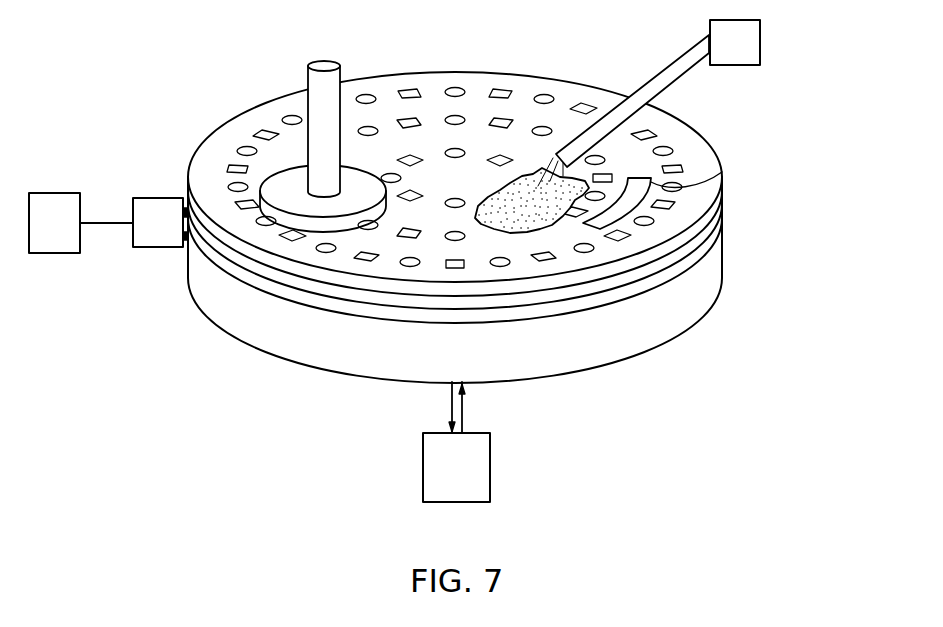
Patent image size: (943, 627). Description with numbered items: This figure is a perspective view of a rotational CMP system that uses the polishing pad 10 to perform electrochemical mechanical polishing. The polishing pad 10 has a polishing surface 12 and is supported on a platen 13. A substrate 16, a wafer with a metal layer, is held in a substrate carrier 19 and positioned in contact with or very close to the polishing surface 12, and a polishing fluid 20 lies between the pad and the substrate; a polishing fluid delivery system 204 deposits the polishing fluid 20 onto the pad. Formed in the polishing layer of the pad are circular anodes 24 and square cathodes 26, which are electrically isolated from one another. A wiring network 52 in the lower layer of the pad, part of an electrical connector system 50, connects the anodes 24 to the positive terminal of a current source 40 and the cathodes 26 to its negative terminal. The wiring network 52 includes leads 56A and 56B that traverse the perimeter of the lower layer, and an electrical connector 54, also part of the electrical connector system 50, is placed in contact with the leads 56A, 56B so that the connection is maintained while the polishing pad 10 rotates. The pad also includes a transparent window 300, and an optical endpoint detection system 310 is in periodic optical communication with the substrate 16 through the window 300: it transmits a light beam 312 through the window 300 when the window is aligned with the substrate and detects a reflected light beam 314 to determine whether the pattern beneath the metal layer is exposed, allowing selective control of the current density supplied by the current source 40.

The polishing pad 10 is at (489, 217).
The polishing surface 12 is at (574, 86).
The platen 13 is at (676, 332).
The substrate 16 is at (357, 173).
The substrate carrier 19 is at (308, 76).
The polishing fluid 20 is at (512, 189).
The anodes 24 is at (368, 95).
The cathodes 26 is at (651, 178).
The current source 40 is at (48, 255).
The electrical connector system 50 is at (136, 226).
The wiring network 52 is at (704, 232).
The electrical connector 54 is at (143, 200).
The lead 56A is at (186, 207).
The lead 56B is at (184, 250).
The polishing fluid delivery system 204 is at (748, 91).
The transparent window 300 is at (710, 165).
The optical endpoint detection system 310 is at (488, 489).
The light beam 312 is at (463, 415).
The reflected light beam 314 is at (451, 403).